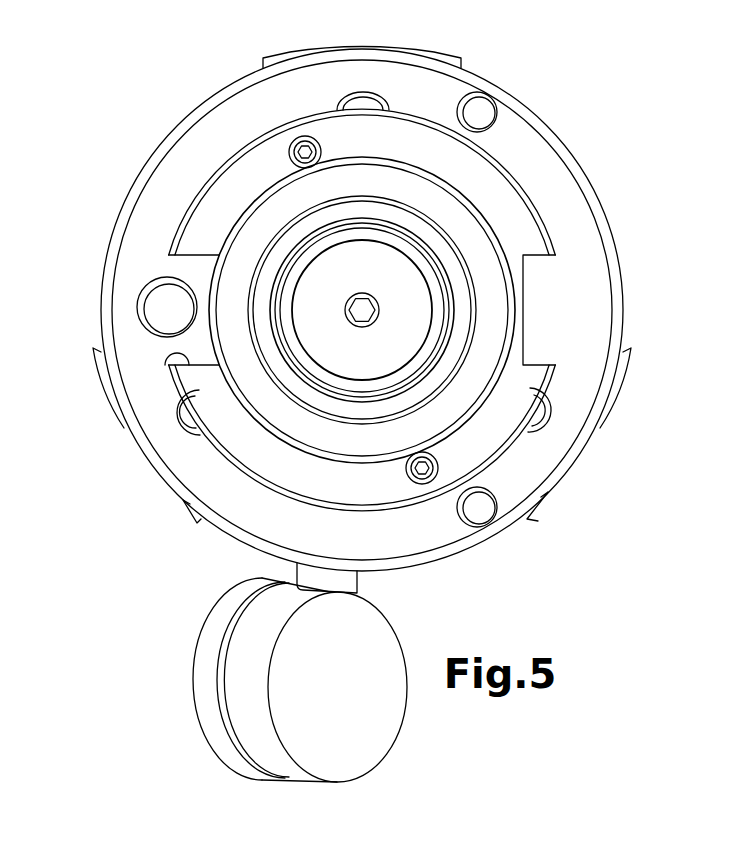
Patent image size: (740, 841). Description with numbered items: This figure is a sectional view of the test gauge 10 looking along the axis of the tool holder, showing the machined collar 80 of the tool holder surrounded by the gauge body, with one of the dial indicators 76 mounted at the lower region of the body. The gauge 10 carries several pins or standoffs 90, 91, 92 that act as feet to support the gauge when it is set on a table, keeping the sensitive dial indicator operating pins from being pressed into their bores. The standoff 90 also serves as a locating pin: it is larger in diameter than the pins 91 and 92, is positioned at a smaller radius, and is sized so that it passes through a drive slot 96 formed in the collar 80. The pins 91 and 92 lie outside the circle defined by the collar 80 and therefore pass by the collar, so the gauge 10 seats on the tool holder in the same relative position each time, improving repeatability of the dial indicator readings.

The test gauge 10 is at (612, 132).
The dial indicator 76 is at (352, 713).
The machined collar 80 is at (526, 228).
The standoff 90 is at (166, 306).
The standoff 91 is at (480, 507).
The standoff 92 is at (476, 112).
The drive slot 96 is at (167, 353).